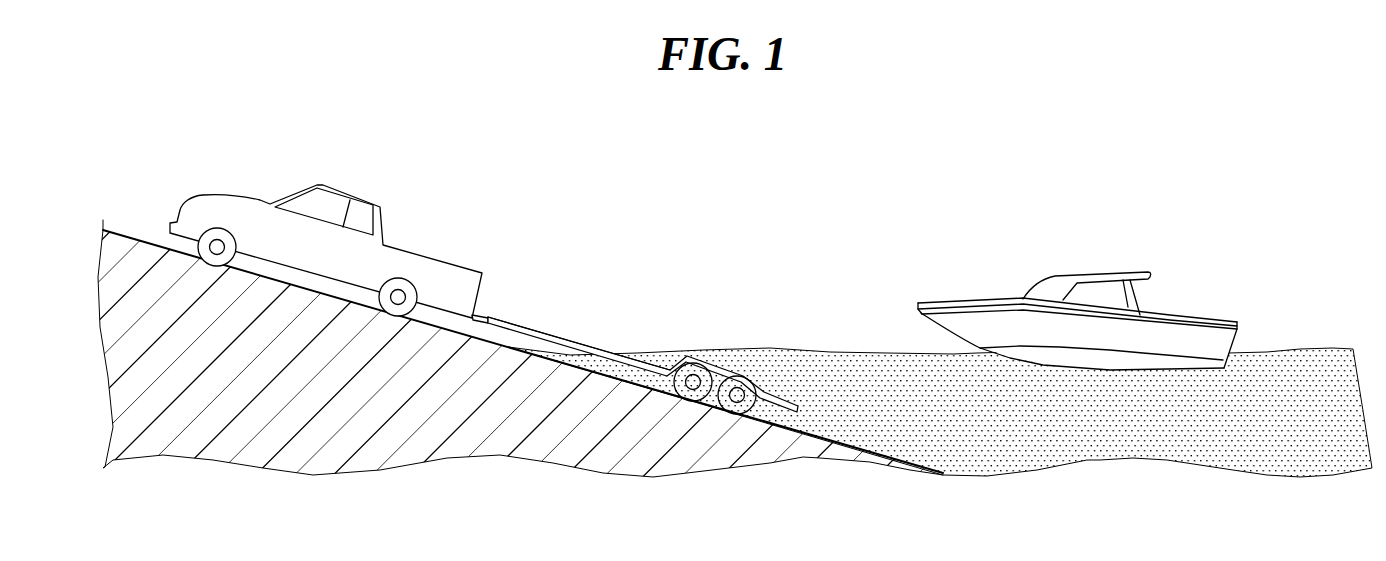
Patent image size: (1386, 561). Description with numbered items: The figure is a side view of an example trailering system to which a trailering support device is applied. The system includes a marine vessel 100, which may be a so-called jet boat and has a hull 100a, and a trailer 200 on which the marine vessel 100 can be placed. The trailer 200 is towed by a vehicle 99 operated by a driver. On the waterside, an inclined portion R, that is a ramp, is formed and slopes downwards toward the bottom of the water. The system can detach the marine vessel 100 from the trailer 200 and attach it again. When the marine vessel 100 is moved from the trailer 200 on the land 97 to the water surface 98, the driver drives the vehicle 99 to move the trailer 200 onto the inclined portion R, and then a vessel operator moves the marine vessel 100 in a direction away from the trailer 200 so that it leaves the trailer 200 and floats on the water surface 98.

The land 97 is at (122, 232).
The water surface 98 is at (1313, 347).
The vehicle 99 is at (355, 191).
The marine vessel 100 is at (1077, 276).
The hull 100a is at (972, 299).
The trailer 200 is at (508, 316).
The inclined portion R is at (565, 316).